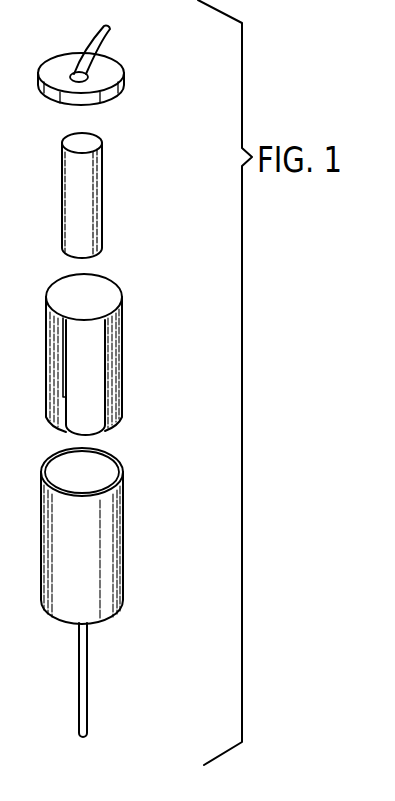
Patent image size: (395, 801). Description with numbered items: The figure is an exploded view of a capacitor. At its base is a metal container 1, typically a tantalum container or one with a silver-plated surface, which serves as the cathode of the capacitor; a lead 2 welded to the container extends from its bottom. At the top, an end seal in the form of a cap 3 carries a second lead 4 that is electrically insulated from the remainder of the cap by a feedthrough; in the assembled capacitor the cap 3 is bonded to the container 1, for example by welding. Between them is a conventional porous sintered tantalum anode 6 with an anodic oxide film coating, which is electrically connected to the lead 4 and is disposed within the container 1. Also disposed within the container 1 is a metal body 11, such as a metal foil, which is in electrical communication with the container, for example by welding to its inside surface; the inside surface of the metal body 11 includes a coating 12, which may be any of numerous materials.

The metal container 1 is at (105, 540).
The lead 2 is at (84, 692).
The cap 3 is at (110, 98).
The second lead 4 is at (100, 42).
The porous sintered tantalum anode 6 is at (90, 200).
The metal body 11 is at (95, 385).
The coating 12 is at (97, 292).